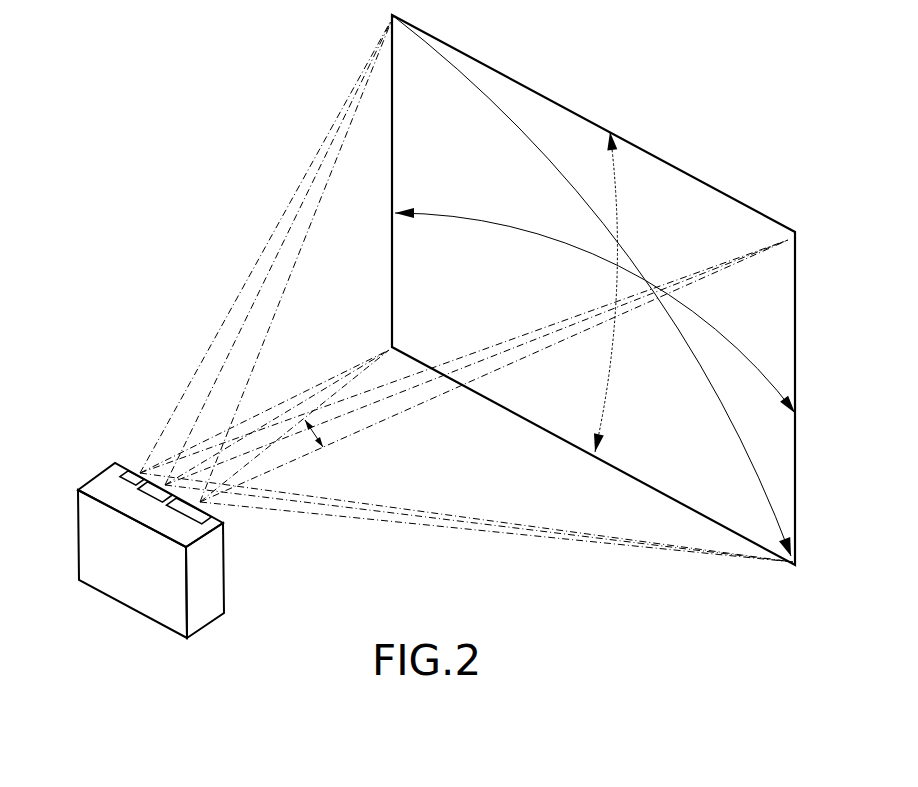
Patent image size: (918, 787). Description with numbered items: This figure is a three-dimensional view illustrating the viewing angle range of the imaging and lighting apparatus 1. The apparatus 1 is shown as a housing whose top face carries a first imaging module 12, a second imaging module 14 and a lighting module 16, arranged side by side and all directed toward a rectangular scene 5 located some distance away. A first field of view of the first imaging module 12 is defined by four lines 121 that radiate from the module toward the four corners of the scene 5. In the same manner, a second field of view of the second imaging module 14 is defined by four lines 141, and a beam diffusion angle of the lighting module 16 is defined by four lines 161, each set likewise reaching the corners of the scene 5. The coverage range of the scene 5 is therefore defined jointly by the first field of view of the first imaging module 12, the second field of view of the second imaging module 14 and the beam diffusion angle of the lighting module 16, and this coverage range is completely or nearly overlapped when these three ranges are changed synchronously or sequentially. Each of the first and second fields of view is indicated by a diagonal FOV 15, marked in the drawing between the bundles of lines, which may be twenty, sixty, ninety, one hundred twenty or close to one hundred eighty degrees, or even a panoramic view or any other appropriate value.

The projector 1 is at (92, 552).
The scene 5 is at (687, 195).
The first imaging module 12 is at (225, 527).
The second imaging module 14 is at (147, 495).
The lighting module 16 is at (137, 473).
The diagonal FOV 15 is at (335, 442).
The lines 121 is at (417, 528).
The lines 141 is at (360, 512).
The lines 161 is at (393, 508).